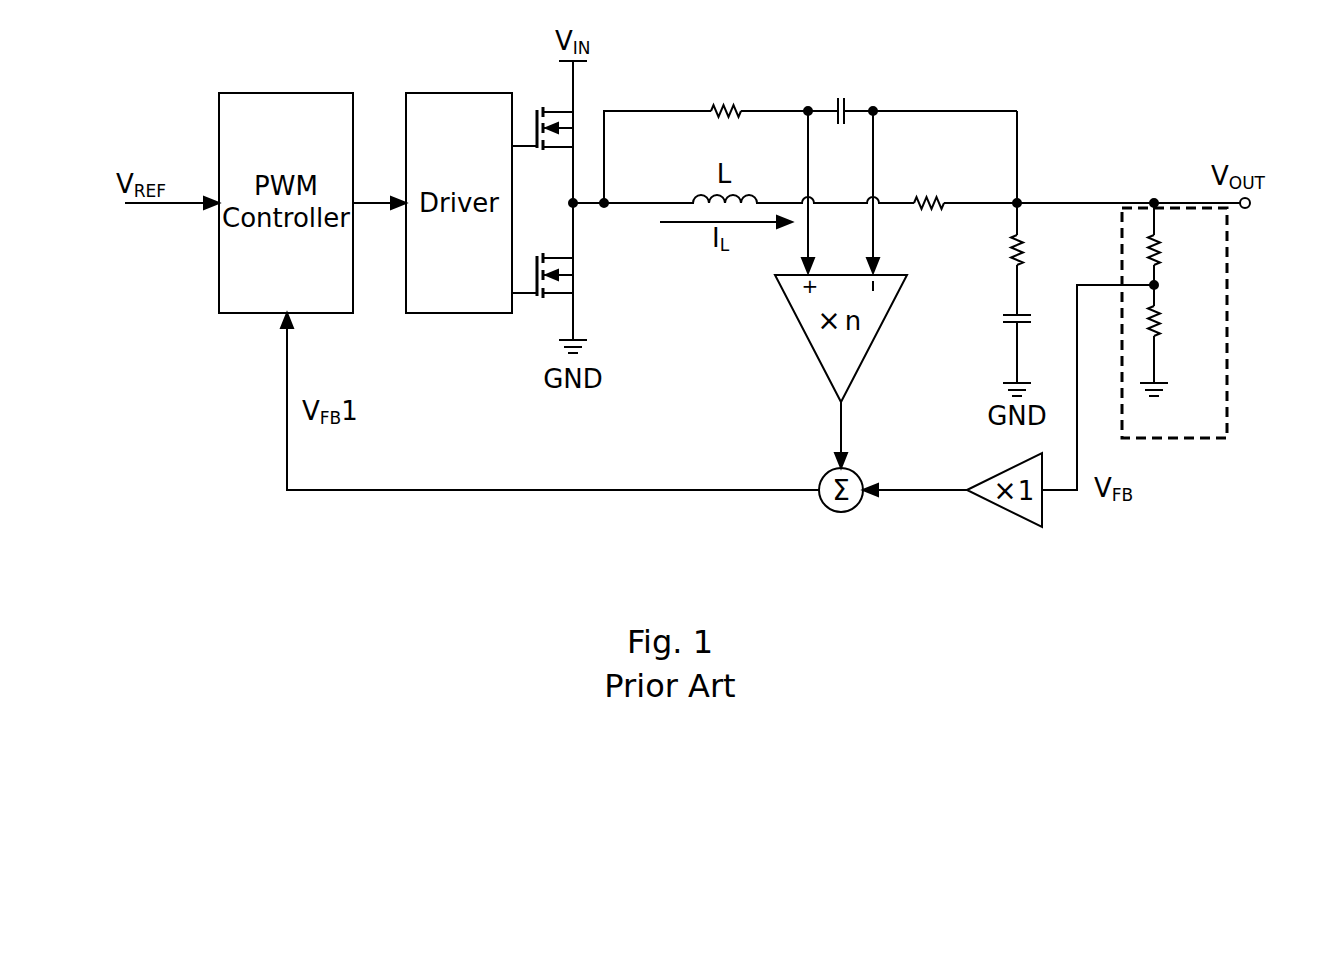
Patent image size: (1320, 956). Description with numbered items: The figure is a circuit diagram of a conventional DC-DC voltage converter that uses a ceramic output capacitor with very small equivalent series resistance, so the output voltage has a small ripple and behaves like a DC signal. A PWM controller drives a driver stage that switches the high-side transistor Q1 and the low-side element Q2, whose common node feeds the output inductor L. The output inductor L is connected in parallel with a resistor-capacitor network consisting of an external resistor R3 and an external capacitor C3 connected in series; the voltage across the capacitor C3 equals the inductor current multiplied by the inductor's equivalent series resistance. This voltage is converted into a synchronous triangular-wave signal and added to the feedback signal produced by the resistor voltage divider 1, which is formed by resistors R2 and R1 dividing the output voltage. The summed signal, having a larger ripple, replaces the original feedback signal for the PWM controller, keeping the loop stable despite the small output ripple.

The resistor voltage divider 1 is at (1183, 438).
The high-side transistor Q1 is at (542, 132).
The low-side element Q2 is at (542, 271).
The external resistor R3 is at (726, 129).
The external capacitor C3 is at (840, 127).
The divider resistor R1 is at (1176, 324).
The divider resistor R2 is at (1176, 254).